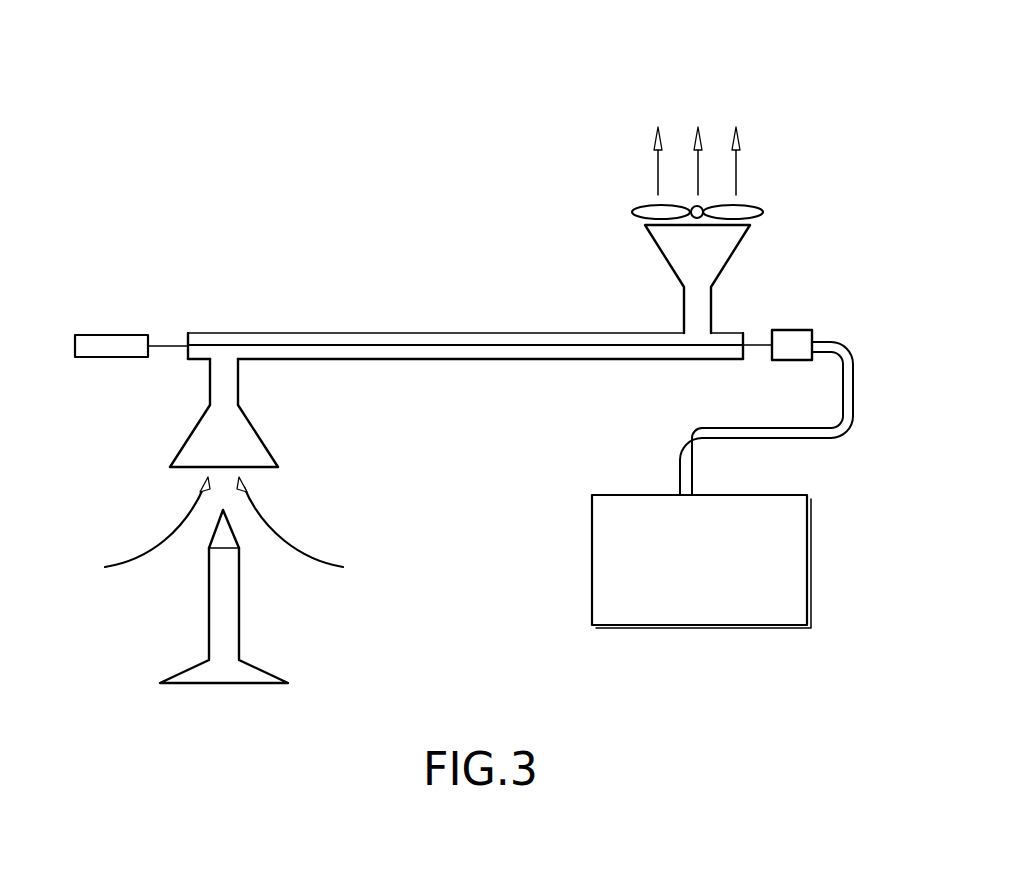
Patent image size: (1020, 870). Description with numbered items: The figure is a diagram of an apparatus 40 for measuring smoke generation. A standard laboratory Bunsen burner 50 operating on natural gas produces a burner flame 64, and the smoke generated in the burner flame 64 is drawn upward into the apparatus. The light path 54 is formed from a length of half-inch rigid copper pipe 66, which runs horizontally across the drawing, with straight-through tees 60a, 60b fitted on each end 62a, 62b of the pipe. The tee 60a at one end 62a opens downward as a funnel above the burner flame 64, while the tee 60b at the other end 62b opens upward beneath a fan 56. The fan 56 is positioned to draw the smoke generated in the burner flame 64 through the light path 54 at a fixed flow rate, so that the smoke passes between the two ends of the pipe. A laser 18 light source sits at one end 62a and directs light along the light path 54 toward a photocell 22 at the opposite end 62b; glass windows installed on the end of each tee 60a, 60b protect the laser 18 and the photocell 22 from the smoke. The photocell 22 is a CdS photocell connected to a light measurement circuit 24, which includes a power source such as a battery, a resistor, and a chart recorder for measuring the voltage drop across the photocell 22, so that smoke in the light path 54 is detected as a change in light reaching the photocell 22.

The laser 18 is at (113, 335).
The photocell 22 is at (790, 361).
The light measurement circuit 24 is at (684, 571).
The apparatus for measuring smoke generation 40 is at (847, 144).
The Bunsen burner 50 is at (240, 600).
The light path 54 is at (435, 345).
The fan 56 is at (598, 214).
The tee 60a is at (196, 373).
The tee 60b is at (735, 309).
The end 62a is at (187, 337).
The end 62b is at (742, 334).
The burner flame 64 is at (213, 533).
The rigid copper pipe 66 is at (303, 333).